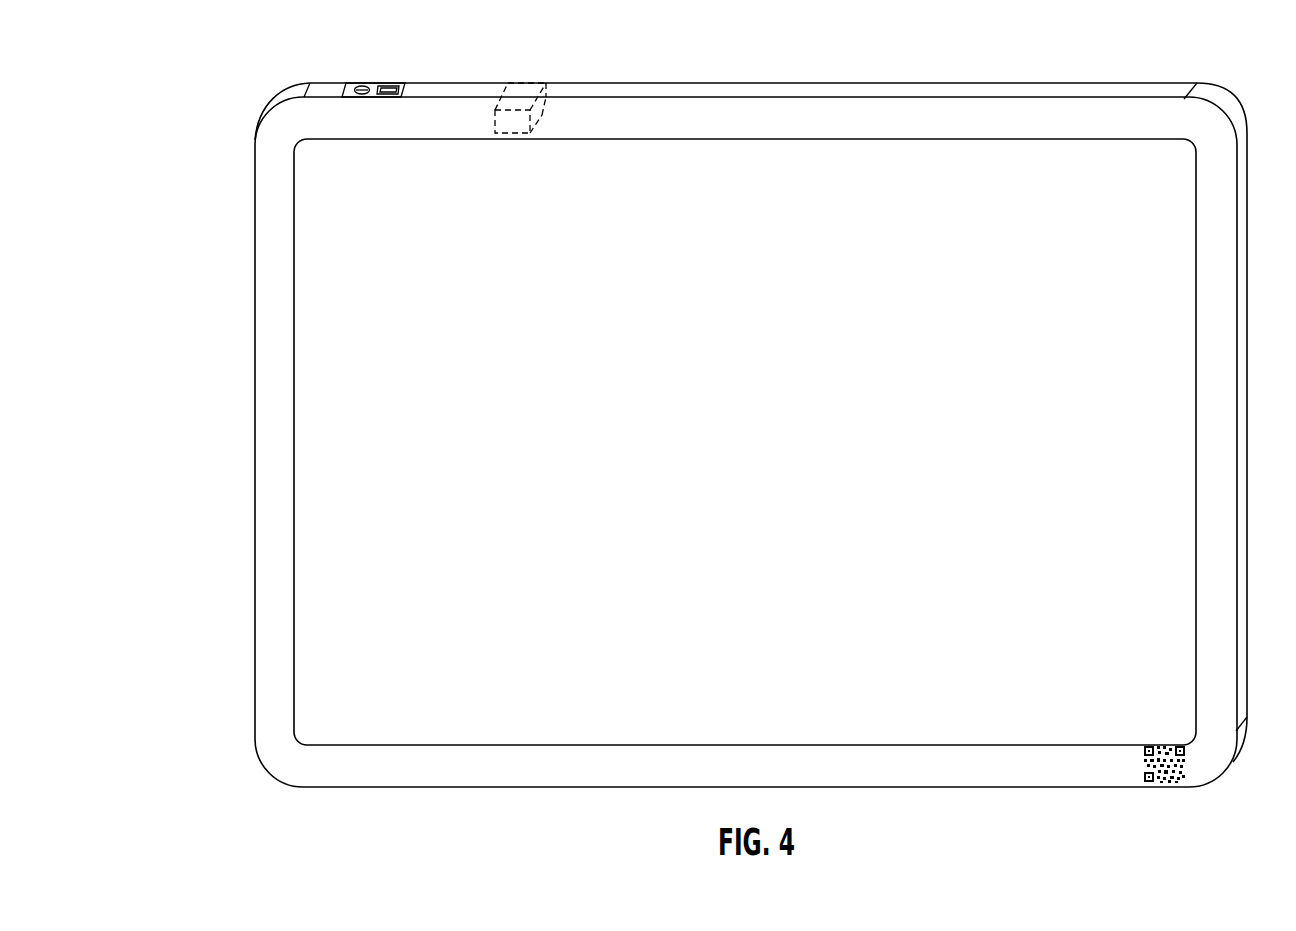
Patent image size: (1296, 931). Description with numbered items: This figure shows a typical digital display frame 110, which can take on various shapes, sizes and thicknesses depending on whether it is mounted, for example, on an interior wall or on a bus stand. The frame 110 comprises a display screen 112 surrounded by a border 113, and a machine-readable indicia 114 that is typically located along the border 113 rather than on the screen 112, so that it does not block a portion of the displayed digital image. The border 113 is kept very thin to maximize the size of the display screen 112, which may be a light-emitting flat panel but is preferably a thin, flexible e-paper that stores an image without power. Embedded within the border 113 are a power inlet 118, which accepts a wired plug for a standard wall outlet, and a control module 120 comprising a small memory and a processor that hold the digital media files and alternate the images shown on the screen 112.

The display frame 110 is at (309, 45).
The display screen 112 is at (325, 378).
The border 113 is at (275, 525).
The machine-readable indicia 114 is at (1143, 764).
The power inlet 118 is at (403, 83).
The control module 120 is at (533, 83).